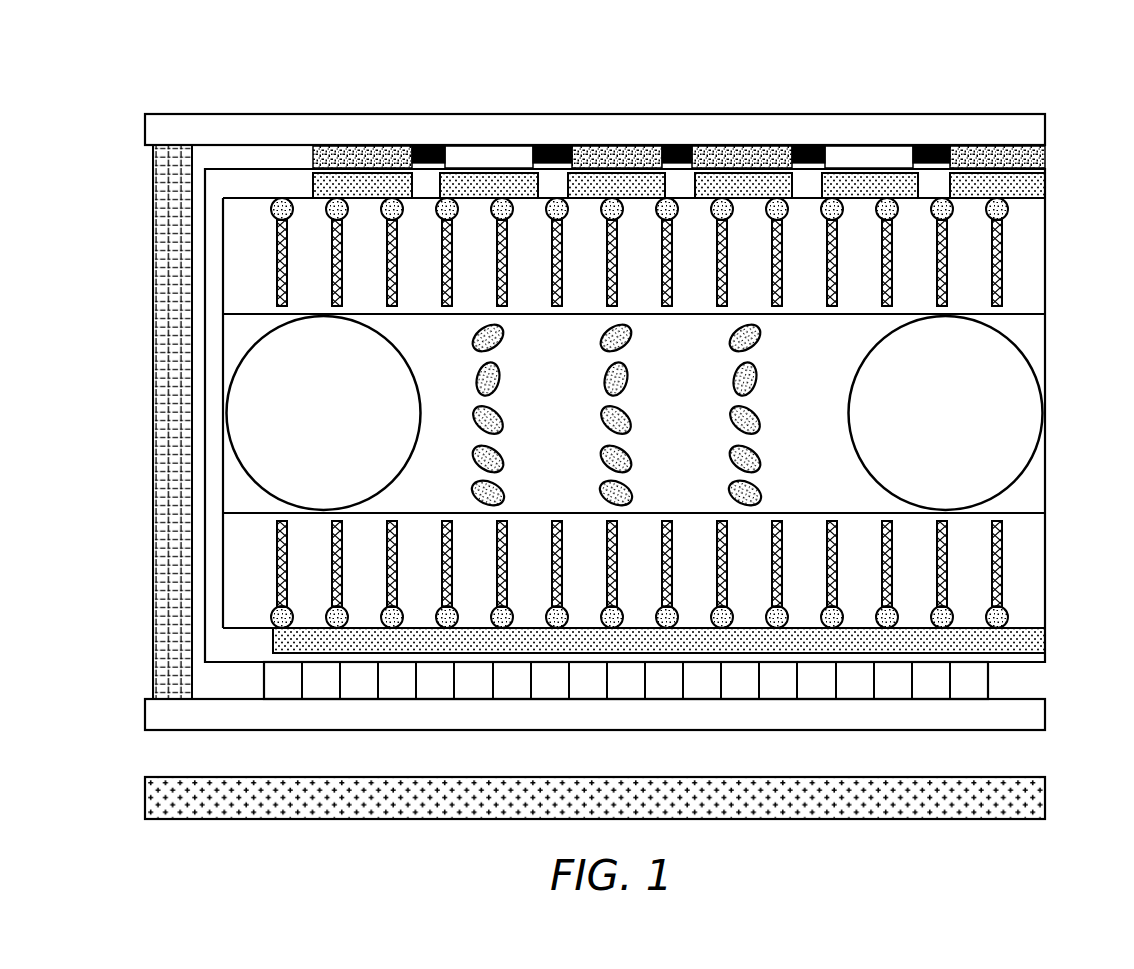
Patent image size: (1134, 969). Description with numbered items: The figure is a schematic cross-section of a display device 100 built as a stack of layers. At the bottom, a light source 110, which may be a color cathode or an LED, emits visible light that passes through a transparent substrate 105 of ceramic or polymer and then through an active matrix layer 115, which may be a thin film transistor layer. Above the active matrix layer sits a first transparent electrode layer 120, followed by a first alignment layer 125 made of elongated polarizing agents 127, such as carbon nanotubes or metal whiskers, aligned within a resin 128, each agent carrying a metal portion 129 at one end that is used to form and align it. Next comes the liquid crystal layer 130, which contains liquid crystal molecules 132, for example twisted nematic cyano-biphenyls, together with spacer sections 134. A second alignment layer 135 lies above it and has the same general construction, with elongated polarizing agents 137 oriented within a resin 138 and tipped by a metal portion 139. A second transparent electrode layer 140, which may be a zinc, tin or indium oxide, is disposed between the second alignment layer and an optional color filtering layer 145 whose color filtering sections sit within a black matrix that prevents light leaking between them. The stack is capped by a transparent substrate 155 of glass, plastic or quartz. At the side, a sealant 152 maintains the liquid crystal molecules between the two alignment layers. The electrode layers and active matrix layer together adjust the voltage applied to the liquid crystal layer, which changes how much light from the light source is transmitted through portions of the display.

The display device 100 is at (606, 71).
The transparent substrate 105 is at (1043, 722).
The light source 110 is at (1043, 805).
The active matrix layer 115 is at (978, 686).
The first transparent electrode layer 120 is at (1042, 645).
The first alignment layer 125 is at (112, 483).
The elongated polarizing agents 127 is at (1003, 548).
The resin 128 is at (1040, 568).
The metal portion 129 is at (1005, 612).
The liquid crystal layer 130 is at (112, 303).
The liquid crystal molecules 132 is at (758, 373).
The spacer sections 134 is at (1000, 401).
The second alignment layer 135 is at (112, 198).
The elongated polarizing agents 137 is at (1005, 255).
The resin 138 is at (1040, 307).
The metal portion 139 is at (1008, 207).
The second transparent electrode layer 140 is at (1040, 190).
The color filtering layer 145 is at (1043, 158).
The sealant 152 is at (172, 150).
The transparent substrate 155 is at (1043, 133).